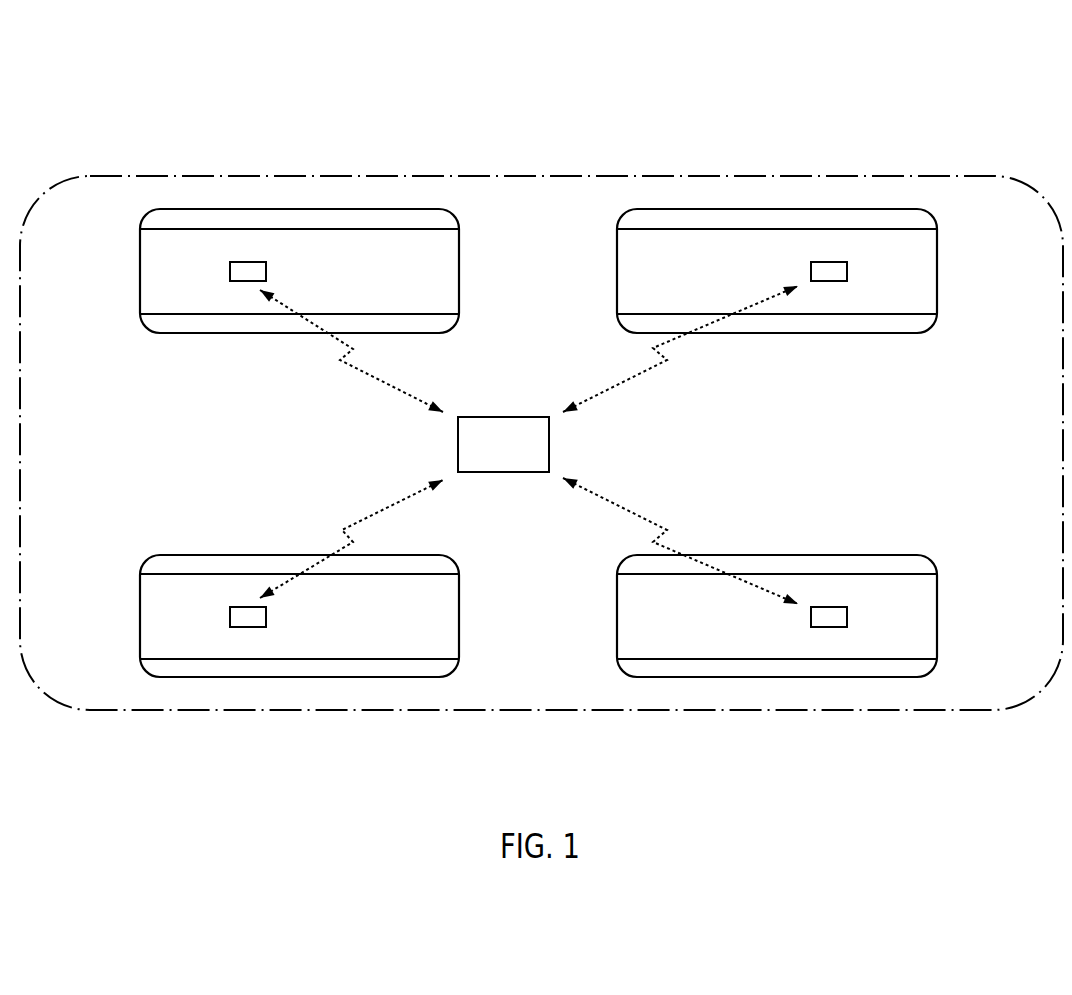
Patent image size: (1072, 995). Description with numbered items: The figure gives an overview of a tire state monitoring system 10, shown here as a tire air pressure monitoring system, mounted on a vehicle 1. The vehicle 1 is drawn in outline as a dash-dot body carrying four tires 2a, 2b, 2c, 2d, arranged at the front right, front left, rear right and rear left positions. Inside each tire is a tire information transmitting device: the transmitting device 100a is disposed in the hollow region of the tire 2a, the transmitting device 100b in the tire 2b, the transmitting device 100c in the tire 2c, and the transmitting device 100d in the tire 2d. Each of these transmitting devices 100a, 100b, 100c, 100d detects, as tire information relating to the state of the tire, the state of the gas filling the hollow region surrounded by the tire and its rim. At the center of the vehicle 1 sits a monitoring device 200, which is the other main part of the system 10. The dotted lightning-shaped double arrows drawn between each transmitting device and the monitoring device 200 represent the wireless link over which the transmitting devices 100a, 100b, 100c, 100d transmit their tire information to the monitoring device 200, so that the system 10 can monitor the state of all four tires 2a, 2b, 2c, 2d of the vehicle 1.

The tire state monitoring system 10 is at (495, 127).
The vehicle 1 is at (548, 176).
The tire 2a is at (322, 209).
The tire 2b is at (322, 677).
The tire 2c is at (755, 209).
The tire 2d is at (755, 677).
The tire information transmitting device 100a is at (244, 262).
The tire information transmitting device 100b is at (245, 627).
The tire information transmitting device 100c is at (830, 262).
The tire information transmitting device 100d is at (830, 627).
The monitoring device 200 is at (503, 417).